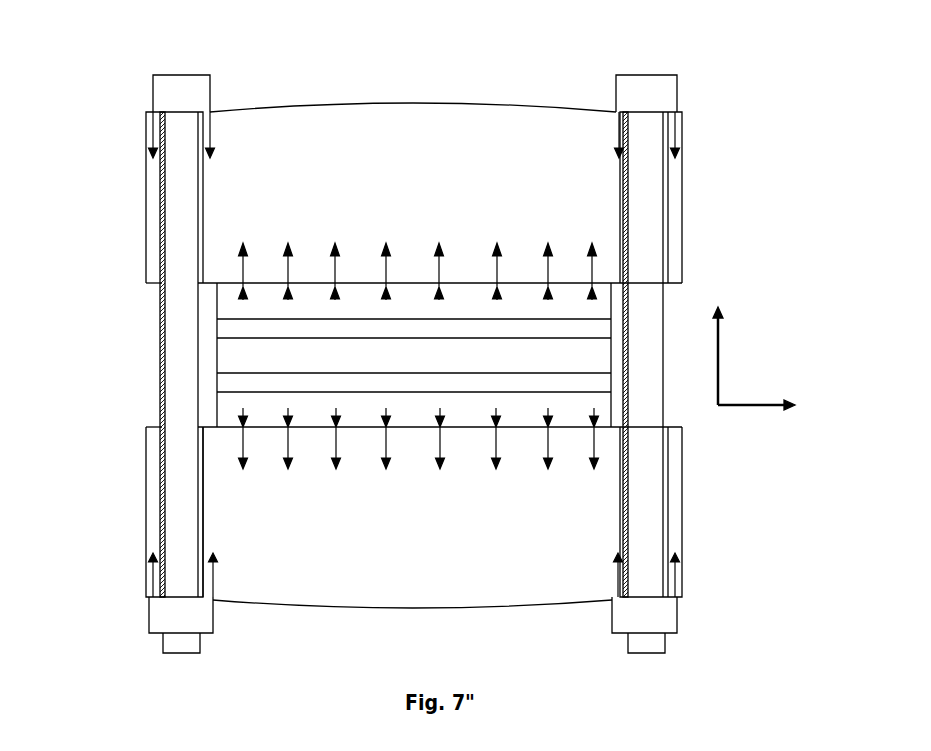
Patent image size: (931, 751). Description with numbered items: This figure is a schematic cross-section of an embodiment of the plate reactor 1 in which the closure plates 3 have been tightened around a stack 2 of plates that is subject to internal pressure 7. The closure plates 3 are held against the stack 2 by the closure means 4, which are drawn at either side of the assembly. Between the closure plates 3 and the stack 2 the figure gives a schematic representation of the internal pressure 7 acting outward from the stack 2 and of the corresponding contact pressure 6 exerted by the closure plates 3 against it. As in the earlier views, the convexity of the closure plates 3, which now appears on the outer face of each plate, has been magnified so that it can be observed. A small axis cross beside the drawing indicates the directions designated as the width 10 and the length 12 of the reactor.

The press apparatus 1 is at (747, 72).
The stack 2 is at (207, 368).
The closure plate 3 is at (274, 150).
The closure means 4 is at (182, 530).
The contact pressure 6 is at (236, 295).
The internal pressure 7 is at (236, 261).
The width 10 is at (768, 412).
The length 12 is at (722, 328).